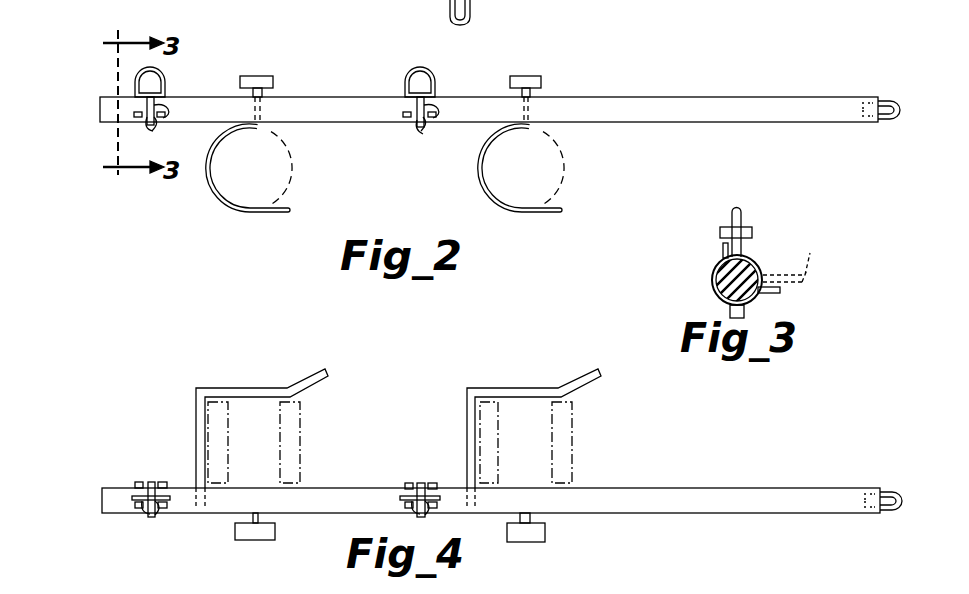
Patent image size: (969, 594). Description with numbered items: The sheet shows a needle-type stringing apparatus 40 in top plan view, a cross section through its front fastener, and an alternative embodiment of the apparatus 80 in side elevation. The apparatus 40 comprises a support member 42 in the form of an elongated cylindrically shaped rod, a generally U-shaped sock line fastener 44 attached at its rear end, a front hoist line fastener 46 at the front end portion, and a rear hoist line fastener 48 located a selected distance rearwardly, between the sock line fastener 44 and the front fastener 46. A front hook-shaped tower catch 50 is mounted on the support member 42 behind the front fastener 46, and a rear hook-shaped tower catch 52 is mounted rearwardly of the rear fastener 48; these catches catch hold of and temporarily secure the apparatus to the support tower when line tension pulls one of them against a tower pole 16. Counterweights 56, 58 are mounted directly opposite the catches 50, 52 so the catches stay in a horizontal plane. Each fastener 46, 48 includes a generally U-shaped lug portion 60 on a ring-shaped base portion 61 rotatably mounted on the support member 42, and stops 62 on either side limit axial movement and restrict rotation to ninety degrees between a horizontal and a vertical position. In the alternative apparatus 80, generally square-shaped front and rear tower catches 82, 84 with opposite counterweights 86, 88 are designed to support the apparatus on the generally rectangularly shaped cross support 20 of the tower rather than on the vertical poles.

In FIG. 2, the tower pole 16 is at (292, 175).
In FIG. 4, the cross support 20 is at (304, 462).
In FIG. 2, the needle-type stringing apparatus 40 is at (658, 85).
In FIG. 2, the support member 42 is at (585, 101).
In FIG. 3, the support member 42 is at (714, 282).
In FIG. 4, the support member 42 is at (662, 491).
In FIG. 2, the sock line fastener 44 is at (888, 98).
In FIG. 4, the sock line fastener 44 is at (887, 490).
In FIG. 2, the front hoist line fastener 46 is at (165, 78).
In FIG. 3, the front hoist line fastener 46 is at (746, 218).
In FIG. 4, the front hoist line fastener 46 is at (142, 508).
In FIG. 2, the rear hoist line fastener 48 is at (430, 68).
In FIG. 4, the rear hoist line fastener 48 is at (404, 486).
In FIG. 2, the front hook-shaped tower catch 50 is at (219, 194).
In FIG. 3, the front hook-shaped tower catch 50 is at (745, 312).
In FIG. 2, the rear hook-shaped tower catch 52 is at (482, 199).
In FIG. 2, the counterweight 56 is at (267, 76).
In FIG. 3, the counterweight 56 is at (753, 233).
In FIG. 2, the counterweight 58 is at (530, 76).
In FIG. 2, the lug portion 60 is at (155, 78).
In FIG. 2, the base portion 61 is at (163, 119).
In FIG. 3, the base portion 61 is at (714, 290).
In FIG. 4, the base portion 61 is at (146, 486).
In FIG. 2, the stops 62 is at (142, 124).
In FIG. 3, the stops 62 is at (723, 246).
In FIG. 4, the stops 62 is at (144, 482).
In FIG. 4, the needle-type stringing apparatus 80 is at (746, 468).
In FIG. 4, the front tower catch 82 is at (244, 388).
In FIG. 4, the rear tower catch 84 is at (502, 388).
In FIG. 4, the counterweight 86 is at (275, 535).
In FIG. 4, the counterweight 88 is at (543, 536).